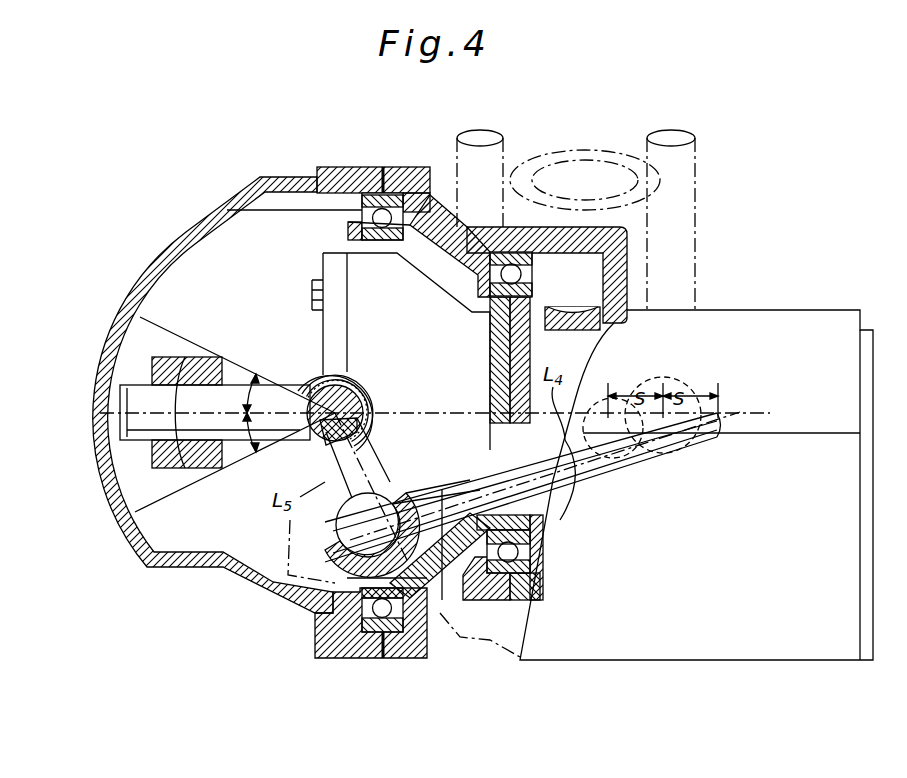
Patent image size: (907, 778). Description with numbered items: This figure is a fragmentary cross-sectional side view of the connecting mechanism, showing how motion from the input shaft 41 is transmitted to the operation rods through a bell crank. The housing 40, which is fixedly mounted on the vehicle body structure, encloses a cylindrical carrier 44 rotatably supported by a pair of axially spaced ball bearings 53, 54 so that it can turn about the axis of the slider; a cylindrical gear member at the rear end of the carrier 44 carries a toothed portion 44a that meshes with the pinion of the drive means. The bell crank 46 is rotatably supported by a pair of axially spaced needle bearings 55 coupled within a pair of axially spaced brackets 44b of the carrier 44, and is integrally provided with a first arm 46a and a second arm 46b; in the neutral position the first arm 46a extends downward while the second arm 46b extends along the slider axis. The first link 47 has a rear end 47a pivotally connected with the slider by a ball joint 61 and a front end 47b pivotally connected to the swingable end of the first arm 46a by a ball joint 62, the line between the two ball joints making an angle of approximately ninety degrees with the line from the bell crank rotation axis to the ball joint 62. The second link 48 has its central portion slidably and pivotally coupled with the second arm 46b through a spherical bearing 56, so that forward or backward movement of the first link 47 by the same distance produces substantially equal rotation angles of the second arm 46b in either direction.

The housing 40 is at (157, 243).
The input shaft 41 is at (265, 597).
The cylindrical carrier 44 is at (347, 240).
The toothed portion 44a is at (573, 307).
The brackets 44b is at (313, 373).
The bell crank 46 is at (283, 440).
The first arm 46a is at (370, 466).
The second arm 46b is at (123, 423).
The first link 47 is at (558, 507).
The rear end 47a is at (622, 460).
The rod socket 47b is at (437, 480).
The second link 48 is at (183, 470).
The ball bearing 53 is at (385, 208).
The ball bearing 54 is at (515, 268).
The needle bearings 55 is at (358, 372).
The spherical bearing 56 is at (180, 358).
The ball joint 61 is at (672, 372).
The ball joint 62 is at (428, 590).